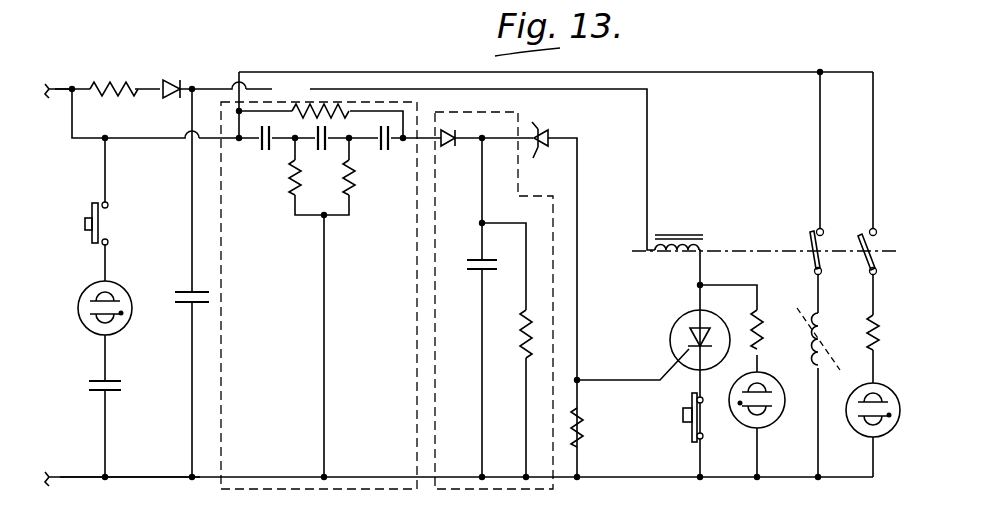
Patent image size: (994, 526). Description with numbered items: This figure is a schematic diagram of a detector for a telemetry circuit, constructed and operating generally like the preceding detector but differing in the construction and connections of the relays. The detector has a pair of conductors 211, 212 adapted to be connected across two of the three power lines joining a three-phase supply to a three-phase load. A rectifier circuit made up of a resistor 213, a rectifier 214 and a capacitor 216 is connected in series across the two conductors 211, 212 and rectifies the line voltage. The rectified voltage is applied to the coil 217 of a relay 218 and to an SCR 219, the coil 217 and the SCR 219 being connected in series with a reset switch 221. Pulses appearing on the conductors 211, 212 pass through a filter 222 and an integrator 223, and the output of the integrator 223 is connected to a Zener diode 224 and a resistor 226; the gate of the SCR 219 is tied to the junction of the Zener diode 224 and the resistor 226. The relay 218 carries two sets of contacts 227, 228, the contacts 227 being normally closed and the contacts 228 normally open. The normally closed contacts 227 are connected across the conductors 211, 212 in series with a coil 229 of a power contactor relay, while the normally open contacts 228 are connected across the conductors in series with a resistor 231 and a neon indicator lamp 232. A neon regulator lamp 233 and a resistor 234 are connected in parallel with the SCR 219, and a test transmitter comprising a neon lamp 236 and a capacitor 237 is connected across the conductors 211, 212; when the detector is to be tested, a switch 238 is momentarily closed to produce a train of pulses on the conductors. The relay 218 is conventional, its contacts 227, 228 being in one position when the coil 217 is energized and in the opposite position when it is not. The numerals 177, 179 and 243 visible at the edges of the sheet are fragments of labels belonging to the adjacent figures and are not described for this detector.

The conductor 211 is at (145, 479).
The conductor 212 is at (58, 86).
The resistor 213 is at (122, 84).
The rectifier 214 is at (170, 80).
The capacitor 216 is at (173, 297).
The coil 217 is at (678, 232).
The relay 218 is at (893, 235).
The SCR 219 is at (672, 326).
The reset switch 221 is at (690, 428).
The filter 222 is at (273, 490).
The integrator 223 is at (463, 490).
The Zener diode 224 is at (548, 133).
The resistor 226 is at (583, 430).
The normally closed contacts 227 is at (808, 242).
The normally open contacts 228 is at (852, 242).
The coil of power contactor relay 229 is at (823, 340).
The resistor 231 is at (878, 325).
The neon indicator lamp 232 is at (885, 392).
The neon regulator lamp 233 is at (777, 410).
The resistor 234 is at (764, 330).
The neon lamp 236 is at (84, 313).
The capacitor 237 is at (88, 385).
The switch 238 is at (90, 213).
The element of adjacent figure 177 is at (292, 0).
The element of adjacent figure 179 is at (432, 0).
The element of adjacent figure 243 is at (656, 525).